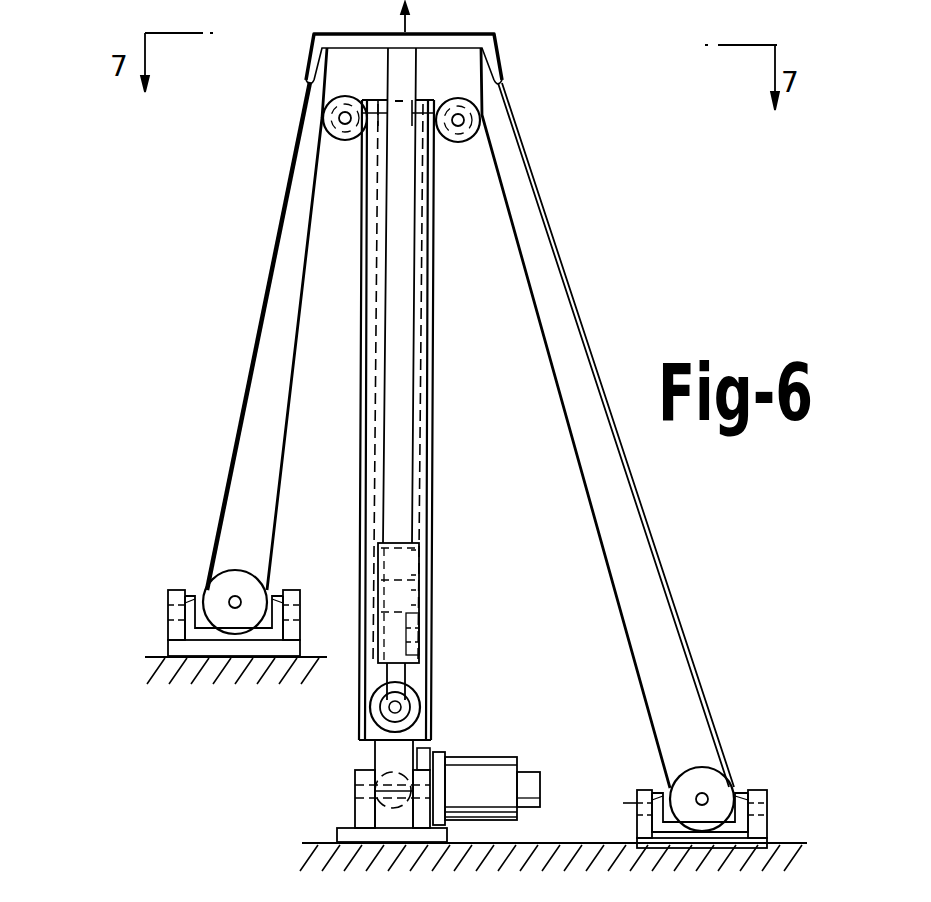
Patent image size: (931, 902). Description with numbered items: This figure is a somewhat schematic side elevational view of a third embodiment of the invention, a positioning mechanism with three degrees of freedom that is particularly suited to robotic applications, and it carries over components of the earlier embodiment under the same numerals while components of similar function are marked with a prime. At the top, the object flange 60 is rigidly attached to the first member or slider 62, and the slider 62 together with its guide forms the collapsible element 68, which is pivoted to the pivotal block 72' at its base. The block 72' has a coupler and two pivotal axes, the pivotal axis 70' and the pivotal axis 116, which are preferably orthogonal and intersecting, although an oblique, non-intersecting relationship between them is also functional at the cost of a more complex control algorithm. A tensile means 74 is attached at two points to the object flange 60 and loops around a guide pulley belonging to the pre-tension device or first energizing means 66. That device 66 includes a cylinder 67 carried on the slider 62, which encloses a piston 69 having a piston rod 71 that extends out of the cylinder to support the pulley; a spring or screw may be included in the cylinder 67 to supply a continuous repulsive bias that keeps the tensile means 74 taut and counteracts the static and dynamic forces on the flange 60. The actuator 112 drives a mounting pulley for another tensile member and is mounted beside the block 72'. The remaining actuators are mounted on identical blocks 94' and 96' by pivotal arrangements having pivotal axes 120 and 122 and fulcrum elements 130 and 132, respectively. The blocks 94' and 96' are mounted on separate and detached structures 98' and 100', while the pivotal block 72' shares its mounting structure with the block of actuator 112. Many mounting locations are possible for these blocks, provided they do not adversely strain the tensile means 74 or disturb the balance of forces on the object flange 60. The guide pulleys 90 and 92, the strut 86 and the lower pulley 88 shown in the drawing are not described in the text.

The object flange 60 is at (484, 34).
The slider 62 is at (410, 60).
The tensile means 74 is at (582, 259).
The left strut 86 is at (215, 567).
The left upper pulley 90 is at (323, 116).
The right upper pulley 92 is at (484, 121).
The pre-tension device 66 is at (446, 580).
The cylinder 67 is at (420, 562).
The piston 69 is at (420, 598).
The piston rod 71 is at (420, 648).
The collapsible element 68 is at (444, 723).
The pivotal axis 70' is at (367, 778).
The pivotal axis 116 is at (343, 792).
The actuator 112 is at (496, 758).
The pivotal block 72' is at (363, 822).
The mounting structure 100' is at (553, 872).
The right lower pulley 88 is at (707, 760).
The fulcrum element 132 is at (747, 790).
The pivotal axis 122 is at (767, 808).
The block 96' is at (731, 831).
The block 94' is at (234, 681).
The mounting structure 98' is at (224, 691).
The pivotal axis 120 is at (168, 607).
The fulcrum element 130 is at (278, 598).